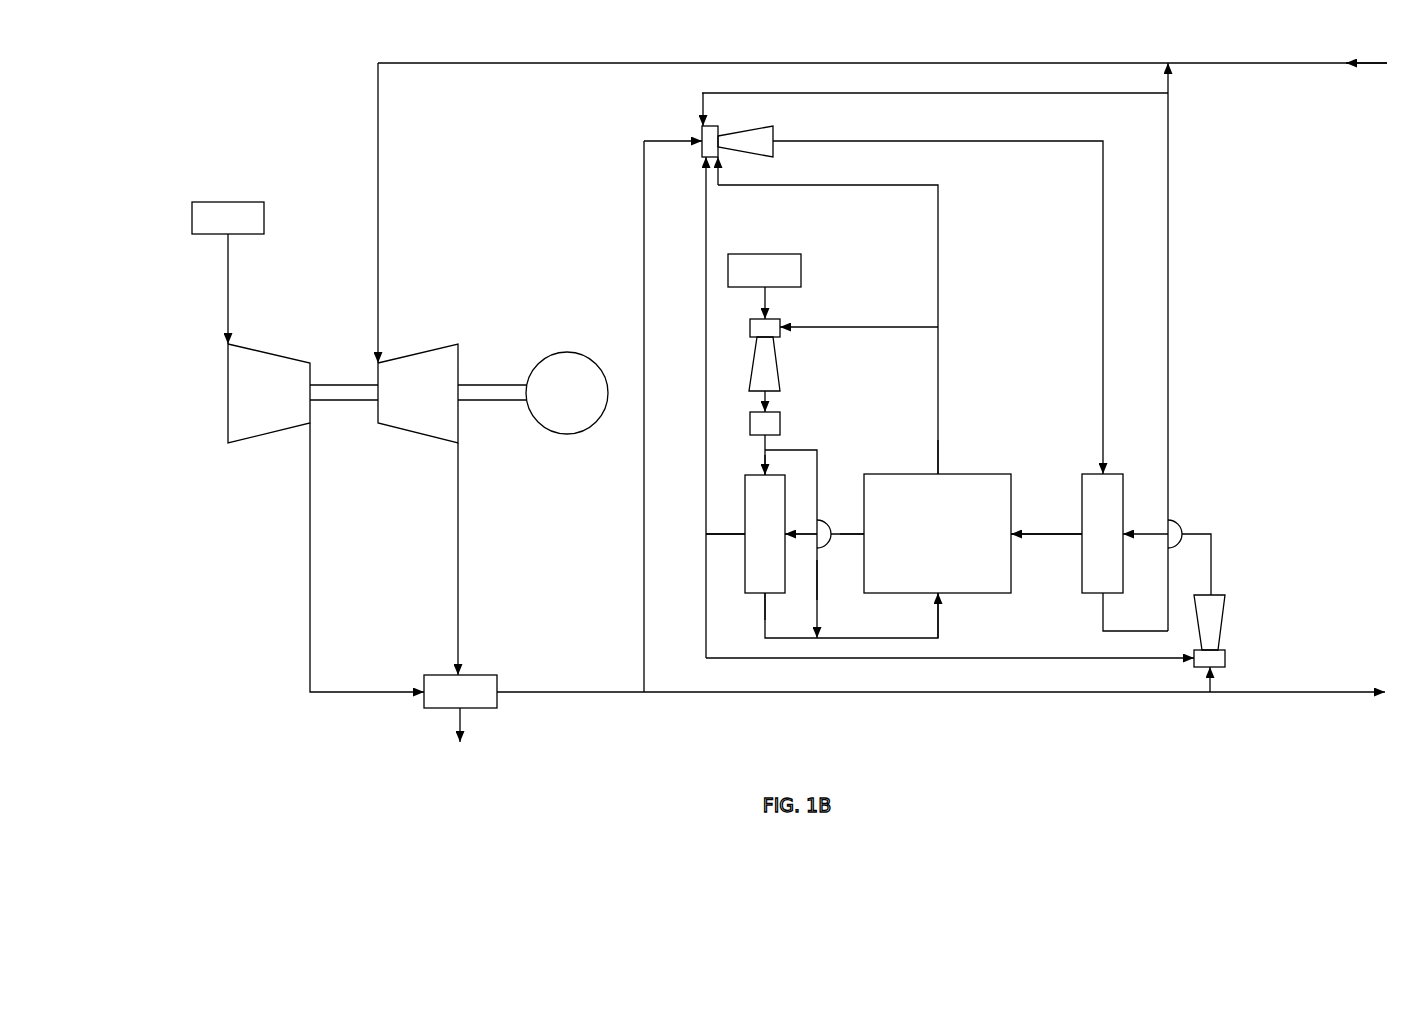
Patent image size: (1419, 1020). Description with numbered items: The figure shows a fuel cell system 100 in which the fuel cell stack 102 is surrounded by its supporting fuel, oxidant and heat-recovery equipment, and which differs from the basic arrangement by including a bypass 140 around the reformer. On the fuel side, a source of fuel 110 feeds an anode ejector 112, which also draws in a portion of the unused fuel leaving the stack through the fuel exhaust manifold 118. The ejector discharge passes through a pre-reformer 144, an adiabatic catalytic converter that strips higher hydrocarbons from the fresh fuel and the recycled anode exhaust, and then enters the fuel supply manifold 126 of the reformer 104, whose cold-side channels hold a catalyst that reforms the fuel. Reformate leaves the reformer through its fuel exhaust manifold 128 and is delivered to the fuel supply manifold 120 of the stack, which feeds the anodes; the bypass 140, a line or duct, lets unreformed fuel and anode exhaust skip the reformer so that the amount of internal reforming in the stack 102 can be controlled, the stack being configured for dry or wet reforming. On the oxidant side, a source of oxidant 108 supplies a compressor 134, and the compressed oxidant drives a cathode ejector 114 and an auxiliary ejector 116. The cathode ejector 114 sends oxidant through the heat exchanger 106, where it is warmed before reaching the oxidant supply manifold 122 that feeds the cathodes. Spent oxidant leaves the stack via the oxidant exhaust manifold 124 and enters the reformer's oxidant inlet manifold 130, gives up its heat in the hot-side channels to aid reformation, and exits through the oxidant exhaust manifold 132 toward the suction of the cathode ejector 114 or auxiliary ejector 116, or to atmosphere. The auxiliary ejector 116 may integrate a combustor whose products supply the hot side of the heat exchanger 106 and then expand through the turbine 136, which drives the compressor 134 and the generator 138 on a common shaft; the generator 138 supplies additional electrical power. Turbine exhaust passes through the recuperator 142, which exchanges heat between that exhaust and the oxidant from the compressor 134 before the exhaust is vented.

The fuel cell system 100 is at (190, 94).
The fuel cell stack 102 is at (920, 544).
The reformer 104 is at (748, 544).
The heat exchanger 106 is at (1086, 544).
The source of oxidant 108 is at (211, 227).
The source of fuel 110 is at (748, 280).
The anode ejector 112 is at (764, 372).
The cathode ejector 114 is at (1211, 613).
The auxiliary ejector 116 is at (752, 138).
The fuel exhaust manifold 118 is at (947, 463).
The fuel supply manifold 120 is at (953, 599).
The oxidant supply manifold 122 is at (1019, 520).
The oxidant exhaust manifold 124 is at (860, 527).
The fuel supply manifold 126 is at (754, 468).
The fuel exhaust manifold 128 is at (757, 600).
The oxidant inlet manifold 130 is at (790, 546).
The oxidant exhaust manifold 132 is at (737, 543).
The compressor 134 is at (242, 404).
The turbine 136 is at (400, 404).
The generator 138 is at (550, 424).
The bypass 140 is at (821, 571).
The recuperator 142 is at (443, 701).
The pre-reformer 144 is at (766, 423).